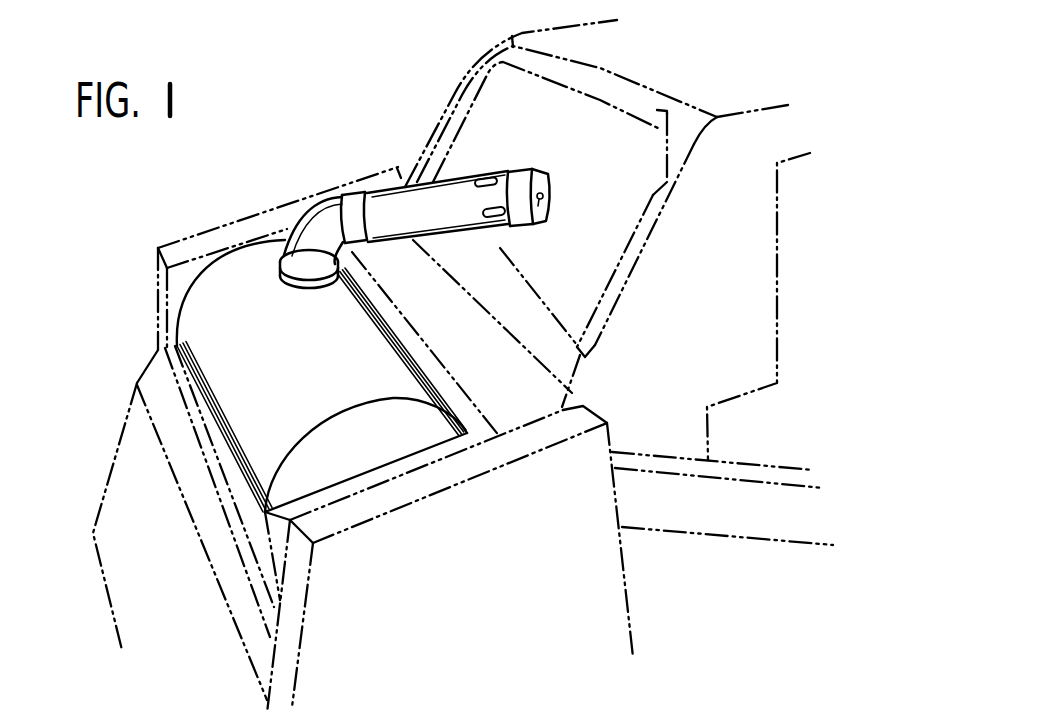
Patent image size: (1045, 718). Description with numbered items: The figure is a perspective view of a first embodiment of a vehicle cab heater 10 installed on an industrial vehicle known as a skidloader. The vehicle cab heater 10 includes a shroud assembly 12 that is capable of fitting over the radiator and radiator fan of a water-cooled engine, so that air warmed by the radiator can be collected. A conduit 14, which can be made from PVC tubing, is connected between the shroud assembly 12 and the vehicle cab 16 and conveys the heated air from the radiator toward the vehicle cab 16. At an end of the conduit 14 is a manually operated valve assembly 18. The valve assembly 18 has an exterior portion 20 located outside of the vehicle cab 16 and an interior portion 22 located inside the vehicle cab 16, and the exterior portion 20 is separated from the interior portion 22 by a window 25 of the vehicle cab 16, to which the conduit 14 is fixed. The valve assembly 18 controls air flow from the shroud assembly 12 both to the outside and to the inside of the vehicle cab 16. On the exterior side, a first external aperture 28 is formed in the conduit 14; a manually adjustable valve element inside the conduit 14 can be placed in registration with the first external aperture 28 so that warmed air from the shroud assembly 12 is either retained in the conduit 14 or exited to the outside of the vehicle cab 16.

The vehicle cab heater 10 is at (306, 122).
The shroud assembly 12 is at (224, 329).
The conduit 14 is at (408, 210).
The vehicle cab 16 is at (840, 47).
The valve assembly 18 is at (487, 377).
The exterior portion 20 is at (512, 188).
The interior portion 22 is at (592, 180).
The window 25 is at (642, 353).
The first external aperture 28 is at (494, 217).